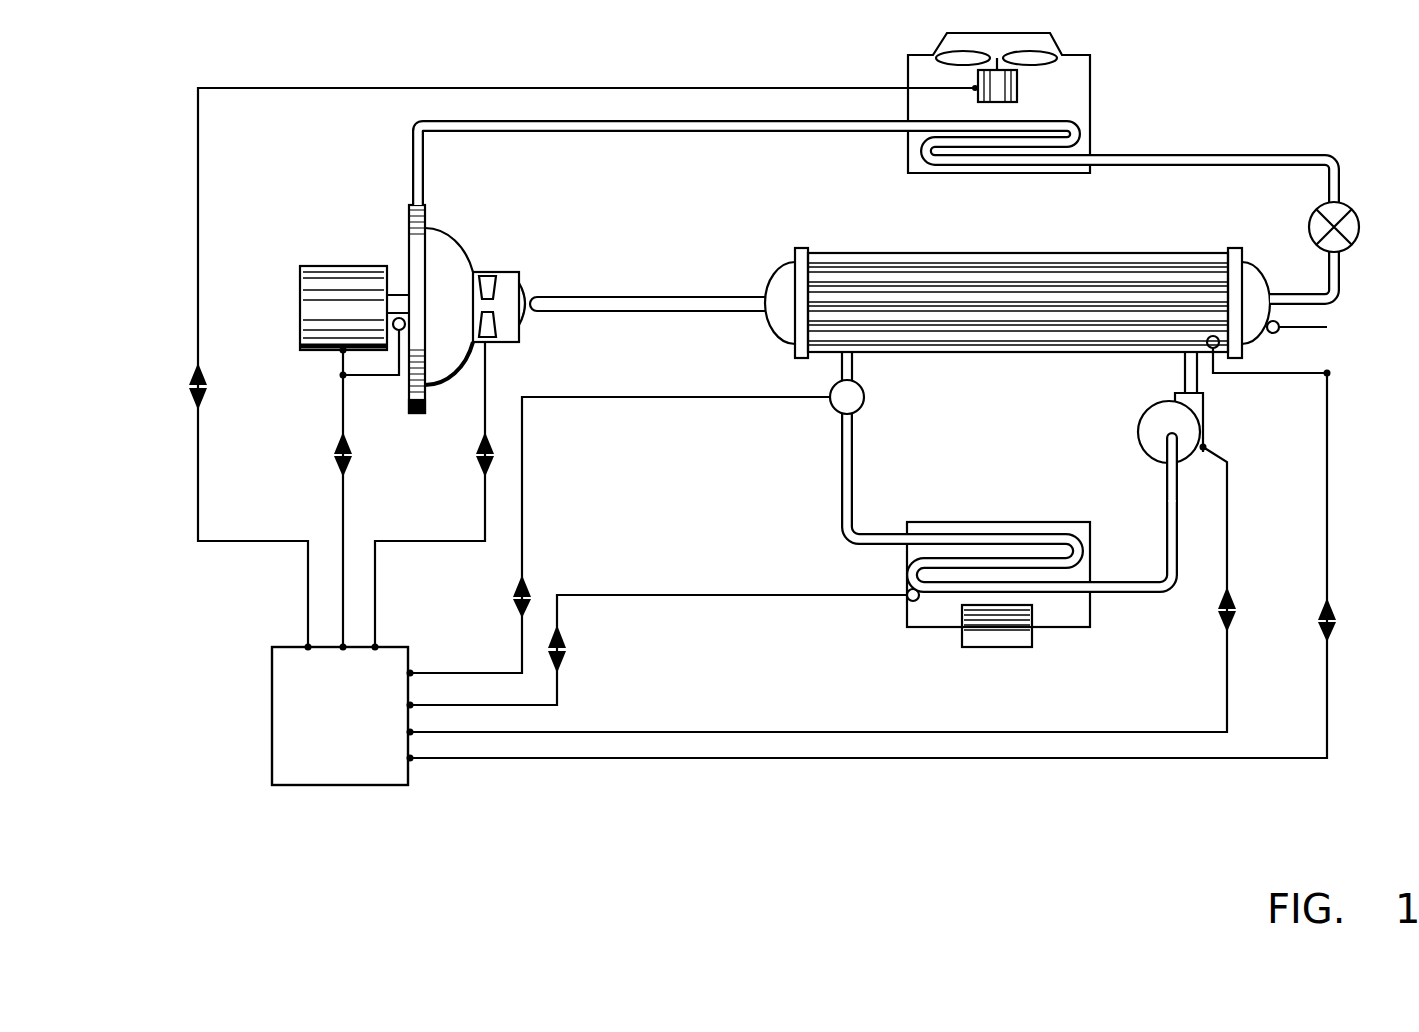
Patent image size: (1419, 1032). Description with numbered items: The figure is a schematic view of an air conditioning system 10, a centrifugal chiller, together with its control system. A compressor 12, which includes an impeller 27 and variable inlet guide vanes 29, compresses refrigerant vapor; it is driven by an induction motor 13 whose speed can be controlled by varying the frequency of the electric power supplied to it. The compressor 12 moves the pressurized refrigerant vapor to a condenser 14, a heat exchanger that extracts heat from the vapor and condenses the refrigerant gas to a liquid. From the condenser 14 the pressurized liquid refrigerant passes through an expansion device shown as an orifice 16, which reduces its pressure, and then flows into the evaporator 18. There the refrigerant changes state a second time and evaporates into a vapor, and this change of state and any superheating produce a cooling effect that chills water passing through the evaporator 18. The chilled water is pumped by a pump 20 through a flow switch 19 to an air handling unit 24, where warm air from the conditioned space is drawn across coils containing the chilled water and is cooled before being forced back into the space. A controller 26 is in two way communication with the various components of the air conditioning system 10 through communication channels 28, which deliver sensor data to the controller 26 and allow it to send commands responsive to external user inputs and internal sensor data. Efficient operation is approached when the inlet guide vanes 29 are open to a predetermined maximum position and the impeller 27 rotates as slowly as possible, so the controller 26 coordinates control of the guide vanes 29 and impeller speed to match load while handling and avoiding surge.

The air conditioning system 10 is at (122, 126).
The compressor 12 is at (455, 252).
The induction motor 13 is at (343, 266).
The condenser 14 is at (1093, 80).
The orifice 16 is at (1355, 242).
The evaporator 18 is at (907, 250).
The flow switch 19 is at (828, 412).
The pump 20 is at (1140, 415).
The air handling unit 24 is at (1090, 615).
The controller 26 is at (358, 769).
The impeller 27 is at (425, 215).
The communication channels 28 is at (222, 541).
The inlet guide vanes 29 is at (495, 276).